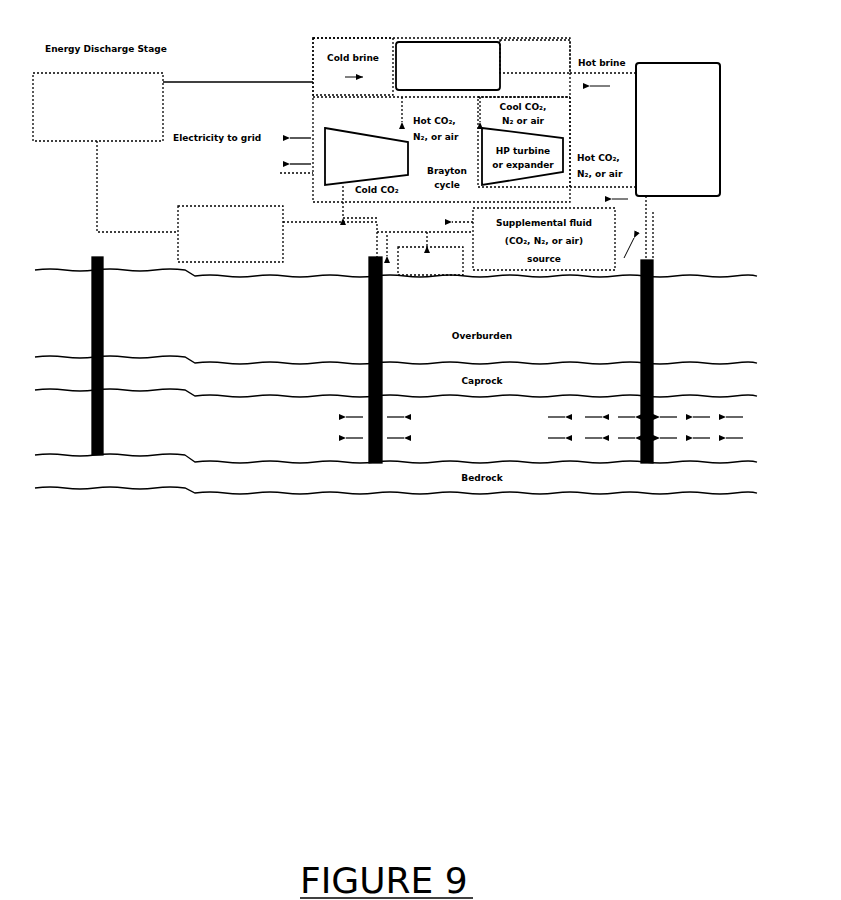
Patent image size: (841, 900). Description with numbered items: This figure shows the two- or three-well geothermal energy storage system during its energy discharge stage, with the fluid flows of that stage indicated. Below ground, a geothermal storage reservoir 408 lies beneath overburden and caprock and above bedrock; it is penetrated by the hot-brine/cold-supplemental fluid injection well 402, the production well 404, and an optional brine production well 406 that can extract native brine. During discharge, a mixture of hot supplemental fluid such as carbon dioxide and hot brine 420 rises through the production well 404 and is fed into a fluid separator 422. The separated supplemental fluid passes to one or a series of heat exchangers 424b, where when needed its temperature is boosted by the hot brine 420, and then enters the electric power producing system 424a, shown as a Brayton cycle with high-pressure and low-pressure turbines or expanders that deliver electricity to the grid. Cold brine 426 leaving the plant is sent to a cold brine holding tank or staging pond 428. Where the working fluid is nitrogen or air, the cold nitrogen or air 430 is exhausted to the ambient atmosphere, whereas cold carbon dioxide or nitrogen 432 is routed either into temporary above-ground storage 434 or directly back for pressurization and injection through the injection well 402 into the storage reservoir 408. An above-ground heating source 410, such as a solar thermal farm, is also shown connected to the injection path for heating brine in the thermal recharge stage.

The cold brine holding tank or staging pond 428 is at (62, 141).
The cold brine 426 is at (310, 82).
The above-ground heating source 410 is at (213, 203).
The cold CO2 or N2 432 is at (338, 222).
The heat exchangers 424b is at (474, 60).
The fluid separator 422 is at (706, 185).
The electric power producing system 424a is at (322, 128).
The cold N2 or air 430 is at (303, 163).
The temporary above-ground storage 434 is at (407, 275).
The hot brine 420 is at (655, 218).
The geothermal storage reservoir 408 is at (189, 438).
The brine production well 406 is at (91, 328).
The hot-brine/cold-supplemental fluid injection well 402 is at (383, 337).
The production well 404 is at (654, 333).